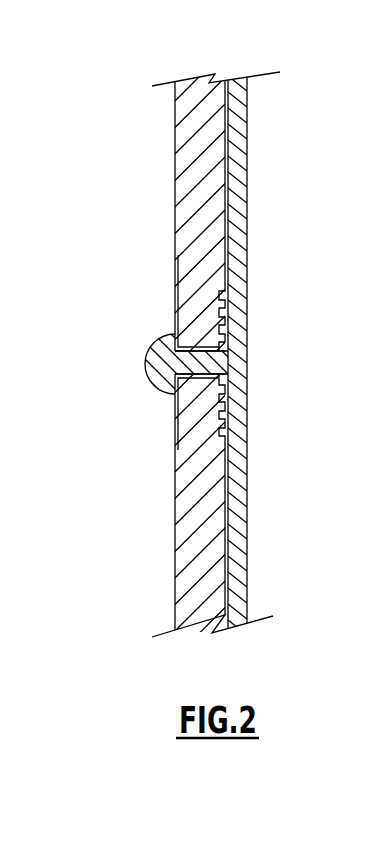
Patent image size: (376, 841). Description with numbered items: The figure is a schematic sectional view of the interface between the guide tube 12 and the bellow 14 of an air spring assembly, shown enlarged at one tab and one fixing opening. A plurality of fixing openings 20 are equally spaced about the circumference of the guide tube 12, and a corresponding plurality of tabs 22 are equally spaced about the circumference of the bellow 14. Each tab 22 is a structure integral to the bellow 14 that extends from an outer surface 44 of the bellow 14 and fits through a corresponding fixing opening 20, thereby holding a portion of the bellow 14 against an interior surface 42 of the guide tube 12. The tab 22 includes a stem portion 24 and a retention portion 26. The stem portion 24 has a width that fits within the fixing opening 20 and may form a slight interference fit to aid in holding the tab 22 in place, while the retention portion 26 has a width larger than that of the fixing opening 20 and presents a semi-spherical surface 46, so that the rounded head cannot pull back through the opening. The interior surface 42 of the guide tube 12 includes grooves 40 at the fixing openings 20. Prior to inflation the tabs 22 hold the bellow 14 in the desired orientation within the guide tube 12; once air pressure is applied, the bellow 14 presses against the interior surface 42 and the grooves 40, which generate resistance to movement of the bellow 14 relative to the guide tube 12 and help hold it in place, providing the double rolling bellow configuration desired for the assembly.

The guide tube 12 is at (182, 153).
The bellow 14 is at (238, 207).
The fixing opening 20 is at (196, 380).
The tab 22 is at (122, 396).
The stem portion 24 is at (229, 335).
The retention portion 26 is at (148, 350).
The grooves 40 is at (245, 298).
The interior surface 42 is at (244, 140).
The outer surface 44 is at (216, 518).
The semi-spherical surface 46 is at (128, 366).